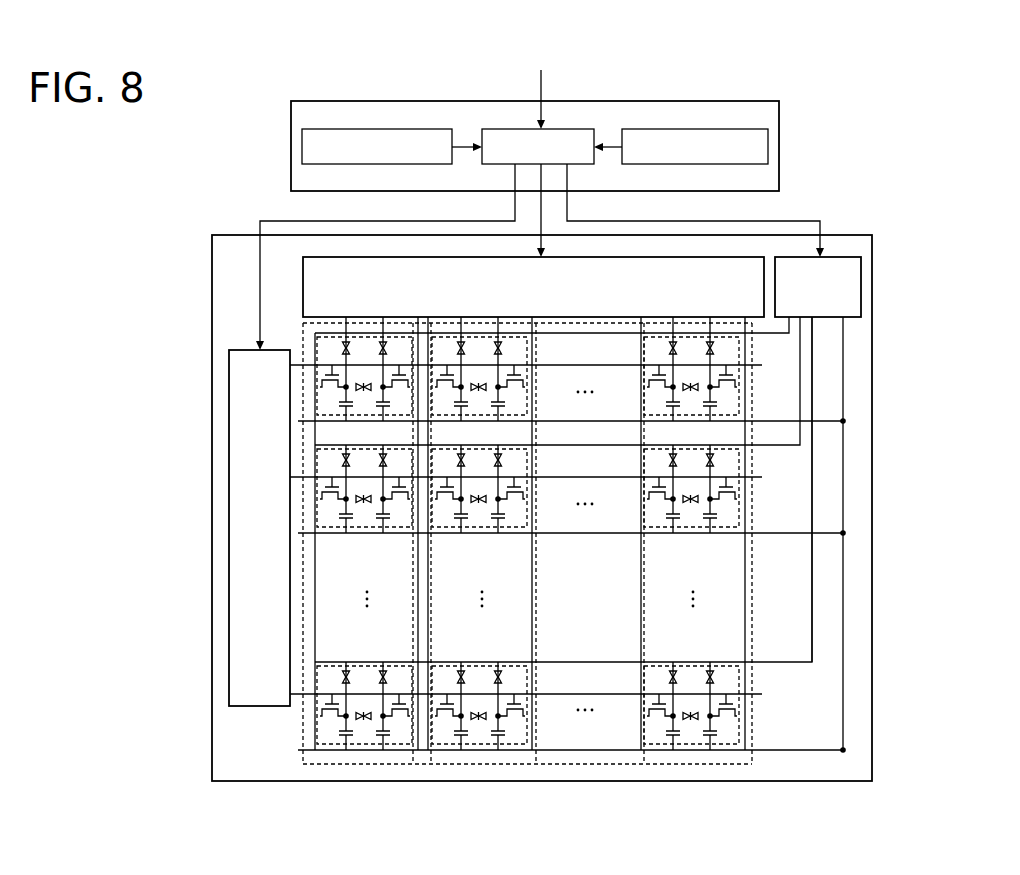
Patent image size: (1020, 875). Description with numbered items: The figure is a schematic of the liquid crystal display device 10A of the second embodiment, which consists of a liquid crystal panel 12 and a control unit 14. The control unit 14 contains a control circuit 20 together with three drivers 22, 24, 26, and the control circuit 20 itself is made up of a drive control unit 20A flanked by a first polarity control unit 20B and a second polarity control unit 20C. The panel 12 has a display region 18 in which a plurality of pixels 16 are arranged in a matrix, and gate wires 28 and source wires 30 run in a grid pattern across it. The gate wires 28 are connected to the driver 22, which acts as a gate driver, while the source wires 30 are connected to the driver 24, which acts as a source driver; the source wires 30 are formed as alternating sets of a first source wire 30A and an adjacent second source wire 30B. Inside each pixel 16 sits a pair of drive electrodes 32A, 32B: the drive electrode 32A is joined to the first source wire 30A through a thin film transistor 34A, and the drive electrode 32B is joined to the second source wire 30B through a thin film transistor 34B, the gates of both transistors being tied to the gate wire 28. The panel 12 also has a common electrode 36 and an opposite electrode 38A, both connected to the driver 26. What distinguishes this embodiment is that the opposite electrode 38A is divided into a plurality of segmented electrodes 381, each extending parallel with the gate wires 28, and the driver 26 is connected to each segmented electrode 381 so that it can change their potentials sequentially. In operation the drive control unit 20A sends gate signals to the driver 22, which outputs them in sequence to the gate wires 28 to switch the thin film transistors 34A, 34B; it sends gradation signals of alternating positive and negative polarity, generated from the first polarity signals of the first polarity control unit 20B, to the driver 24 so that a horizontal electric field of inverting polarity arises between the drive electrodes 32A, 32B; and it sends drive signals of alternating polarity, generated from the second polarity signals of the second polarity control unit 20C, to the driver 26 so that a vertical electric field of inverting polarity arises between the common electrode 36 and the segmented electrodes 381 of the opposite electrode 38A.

The liquid crystal display device 10A is at (268, 156).
The liquid crystal panel 12 is at (232, 235).
The control unit 14 is at (760, 90).
The pixel 16 is at (312, 341).
The display region 18 is at (627, 764).
The control circuit 20 is at (779, 113).
The drive control unit 20A is at (576, 129).
The first polarity control unit 20B is at (376, 129).
The second polarity control unit 20C is at (684, 129).
The driver 22 is at (229, 683).
The driver 24 is at (303, 272).
The driver 26 is at (849, 257).
The gate wire 28 is at (758, 369).
The source wire 30 is at (762, 800).
The first source wire 30A is at (473, 543).
The second source wire 30B is at (582, 543).
The drive electrode 32A is at (464, 392).
The drive electrode 32B is at (505, 396).
The thin film transistor 34A is at (332, 365).
The thin film transistor 34B is at (399, 365).
The common electrode 36 is at (843, 712).
The segmented electrode 381 is at (776, 333).
The opposite electrode 38A is at (809, 659).